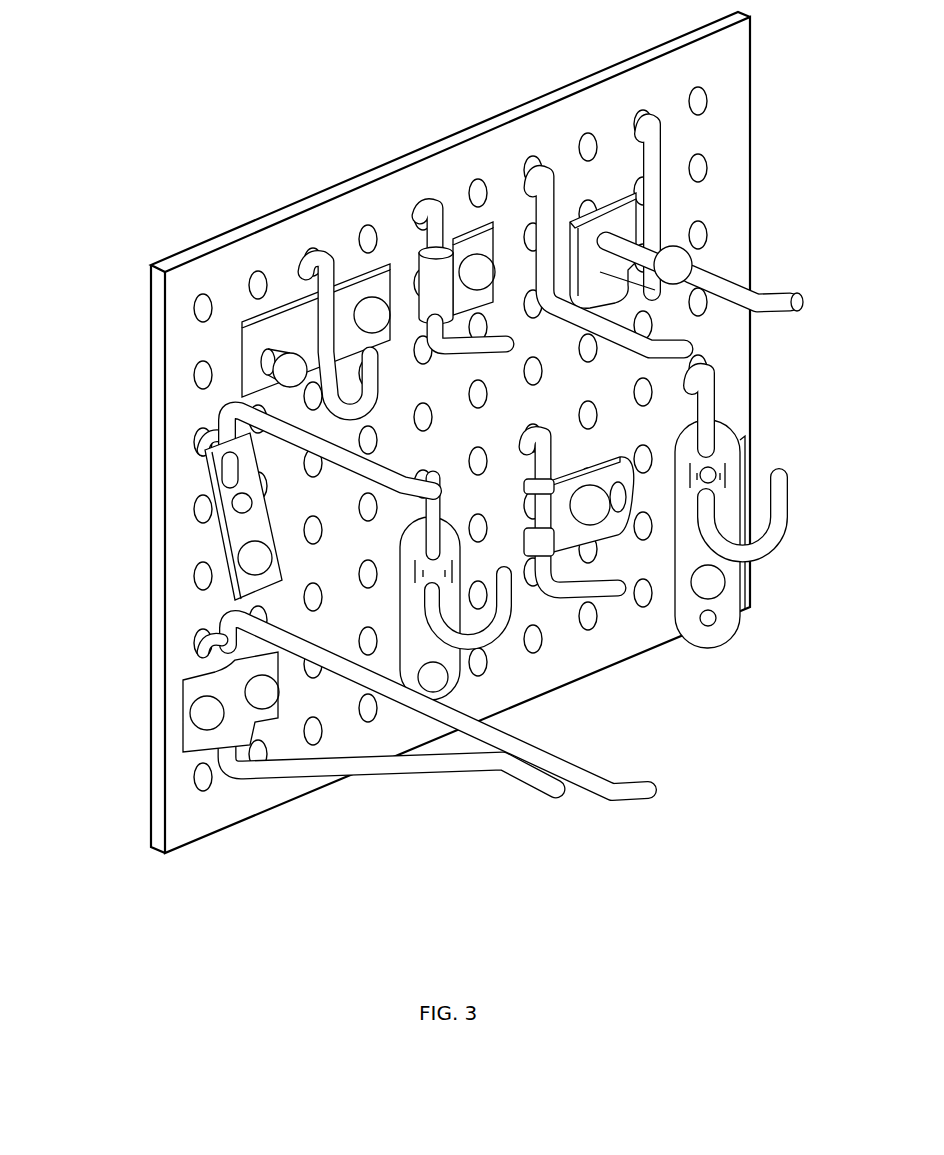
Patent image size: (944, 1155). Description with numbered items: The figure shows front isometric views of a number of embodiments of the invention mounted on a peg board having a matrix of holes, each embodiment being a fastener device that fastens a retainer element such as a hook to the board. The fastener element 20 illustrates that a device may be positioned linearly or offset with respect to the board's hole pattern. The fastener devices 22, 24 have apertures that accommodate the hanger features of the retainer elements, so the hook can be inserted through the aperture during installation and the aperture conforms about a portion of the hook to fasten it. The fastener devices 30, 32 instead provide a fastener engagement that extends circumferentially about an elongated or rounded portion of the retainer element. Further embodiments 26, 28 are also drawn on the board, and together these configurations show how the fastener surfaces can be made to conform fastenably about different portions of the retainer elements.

The fastener element 20 is at (218, 528).
The fastener device 22 is at (737, 590).
The fastener device 24 is at (610, 533).
The double-rod bracket accessory 26 is at (180, 708).
The plate accessory with knob 28 is at (367, 277).
The fastener device 30 is at (467, 243).
The fastener device 32 is at (603, 207).